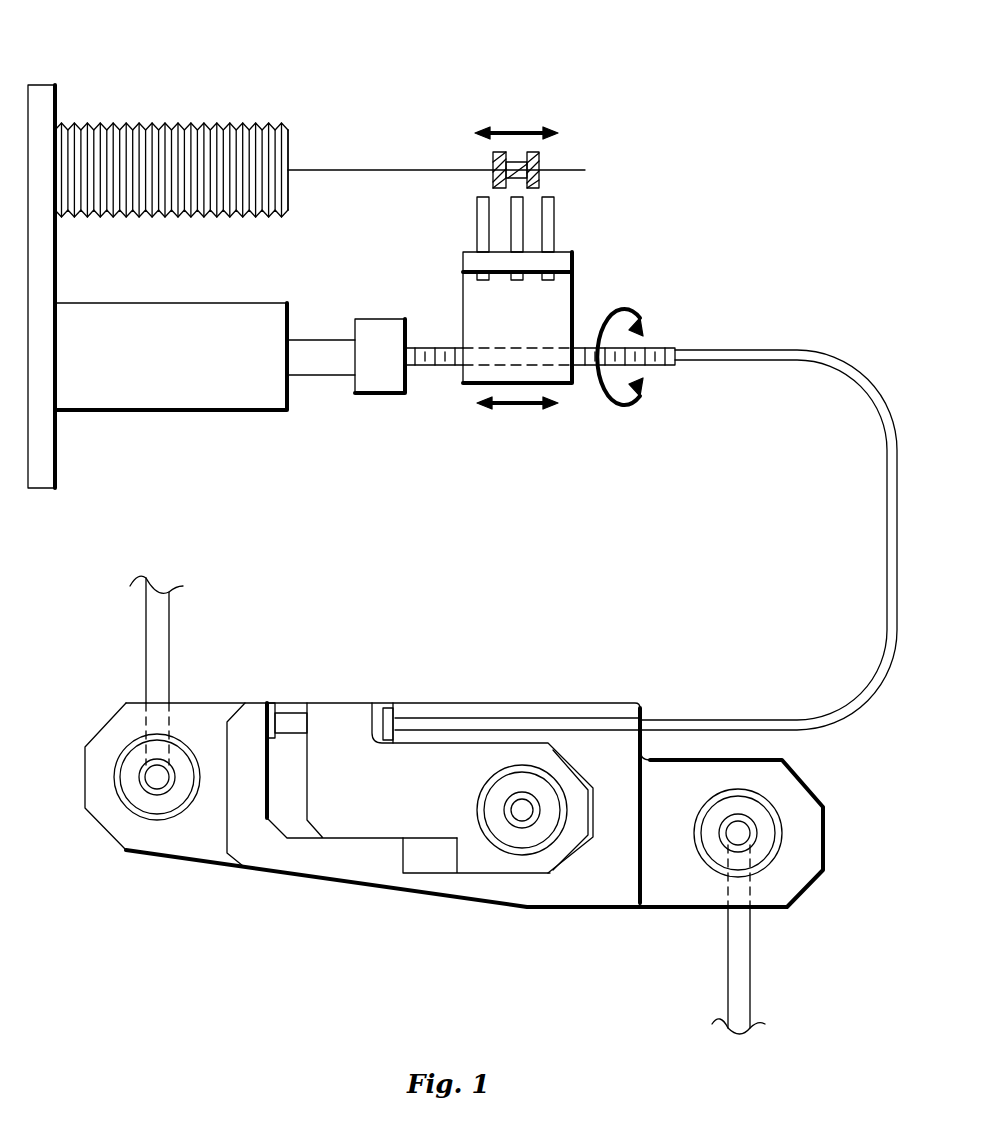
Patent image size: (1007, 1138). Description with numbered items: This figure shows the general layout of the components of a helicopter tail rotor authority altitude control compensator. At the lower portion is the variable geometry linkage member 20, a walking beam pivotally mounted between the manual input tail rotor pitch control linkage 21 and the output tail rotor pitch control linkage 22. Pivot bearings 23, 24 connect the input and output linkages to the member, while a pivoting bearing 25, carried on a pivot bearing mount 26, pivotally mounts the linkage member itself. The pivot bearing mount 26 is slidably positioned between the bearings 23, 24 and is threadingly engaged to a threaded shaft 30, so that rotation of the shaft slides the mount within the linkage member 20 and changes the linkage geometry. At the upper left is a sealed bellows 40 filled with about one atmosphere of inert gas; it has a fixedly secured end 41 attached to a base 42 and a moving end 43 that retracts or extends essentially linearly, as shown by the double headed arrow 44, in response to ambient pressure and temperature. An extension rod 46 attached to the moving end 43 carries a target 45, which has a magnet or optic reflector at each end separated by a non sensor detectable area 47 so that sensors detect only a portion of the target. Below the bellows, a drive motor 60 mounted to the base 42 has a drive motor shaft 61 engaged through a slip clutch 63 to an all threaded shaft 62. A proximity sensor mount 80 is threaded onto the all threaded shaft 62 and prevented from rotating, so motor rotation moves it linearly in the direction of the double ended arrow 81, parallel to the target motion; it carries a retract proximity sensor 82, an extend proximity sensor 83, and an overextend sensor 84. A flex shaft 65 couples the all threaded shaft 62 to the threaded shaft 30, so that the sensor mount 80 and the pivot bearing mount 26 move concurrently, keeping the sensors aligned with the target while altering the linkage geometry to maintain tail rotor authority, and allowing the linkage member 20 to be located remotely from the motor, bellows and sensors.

The variable geometry linkage member 20 is at (372, 885).
The manual input tail rotor pitch control linkage 21 is at (170, 642).
The output tail rotor pitch control linkage 22 is at (728, 985).
The pivot bearing 23 is at (132, 742).
The pivot bearing 24 is at (708, 865).
The pivoting bearing 25 is at (510, 850).
The pivot bearing mount 26 is at (333, 723).
The threaded shaft 30 is at (495, 718).
The bellows 40 is at (171, 134).
The fixedly secured end 41 is at (74, 123).
The base 42 is at (55, 458).
The moving end 43 is at (290, 190).
The double headed arrow 44 is at (517, 133).
The target 45 is at (540, 178).
The extension rod 46 is at (330, 170).
The non sensor detectable area 47 is at (500, 160).
The drive motor 60 is at (195, 410).
The drive motor shaft 61 is at (328, 375).
The all threaded shaft 62 is at (672, 368).
The slip clutch 63 is at (393, 393).
The flex shaft 65 is at (878, 423).
The proximity sensor mount 80 is at (463, 385).
The double ended arrow 81 is at (518, 403).
The retract proximity sensor 82 is at (480, 212).
The extend proximity sensor 83 is at (556, 215).
The overextend sensor 84 is at (512, 215).